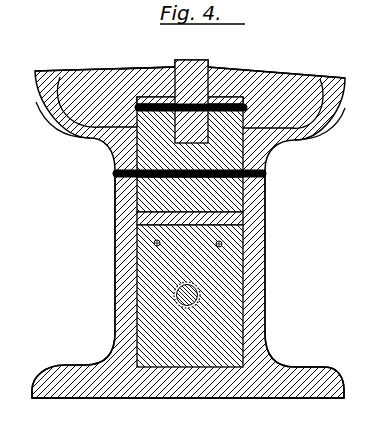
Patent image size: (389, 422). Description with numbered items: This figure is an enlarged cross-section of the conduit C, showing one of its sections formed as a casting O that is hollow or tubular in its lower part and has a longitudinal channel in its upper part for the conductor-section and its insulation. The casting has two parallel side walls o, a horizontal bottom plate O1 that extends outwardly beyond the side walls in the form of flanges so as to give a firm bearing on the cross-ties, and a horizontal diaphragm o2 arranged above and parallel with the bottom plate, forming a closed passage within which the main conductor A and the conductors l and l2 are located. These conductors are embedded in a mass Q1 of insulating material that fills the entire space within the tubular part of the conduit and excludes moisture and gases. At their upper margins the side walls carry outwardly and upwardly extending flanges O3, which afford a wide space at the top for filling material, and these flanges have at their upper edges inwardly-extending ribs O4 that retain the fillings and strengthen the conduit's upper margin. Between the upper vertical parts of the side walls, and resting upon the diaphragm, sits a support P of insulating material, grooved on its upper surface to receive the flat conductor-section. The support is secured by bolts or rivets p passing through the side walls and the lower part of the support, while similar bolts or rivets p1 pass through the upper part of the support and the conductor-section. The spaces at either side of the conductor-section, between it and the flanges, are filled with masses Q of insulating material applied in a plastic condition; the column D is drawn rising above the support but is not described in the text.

The casting O is at (250, 263).
The masses of insulating material Q is at (95, 82).
The inwardly-extending ribs O4 is at (329, 69).
The outwardly and upwardly extending flanges O3 is at (323, 128).
The conduit C is at (147, 52).
The central column D is at (195, 60).
The bolts or rivets p1 is at (226, 106).
The support P is at (153, 157).
The bolts or rivets p is at (267, 173).
The horizontal diaphragm o2 is at (215, 212).
The side walls o is at (250, 230).
The conductor l is at (152, 244).
The conductor l2 is at (222, 244).
The main conductor A is at (173, 298).
The mass of insulating material Q1 is at (222, 338).
The horizontal bottom plate O1 is at (172, 383).